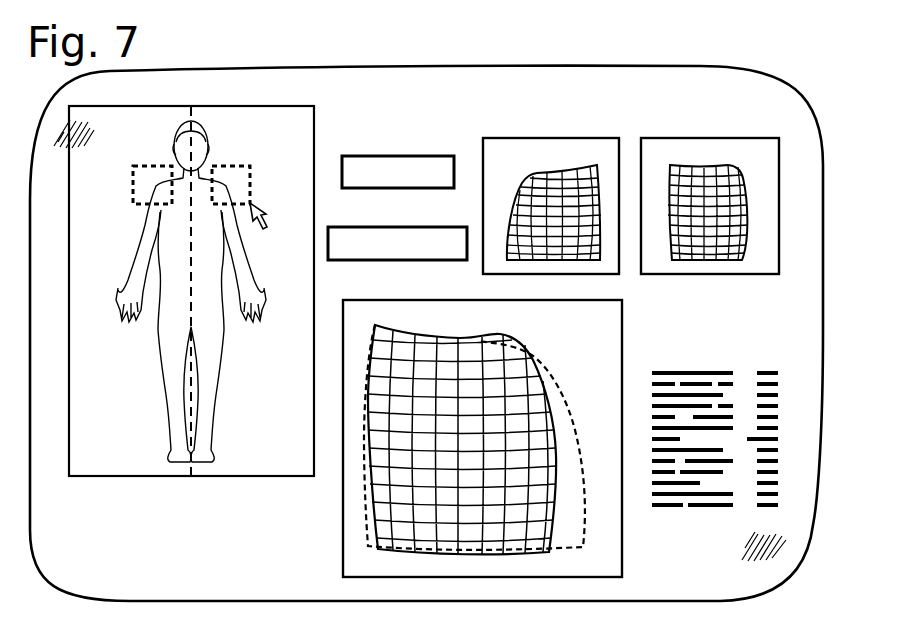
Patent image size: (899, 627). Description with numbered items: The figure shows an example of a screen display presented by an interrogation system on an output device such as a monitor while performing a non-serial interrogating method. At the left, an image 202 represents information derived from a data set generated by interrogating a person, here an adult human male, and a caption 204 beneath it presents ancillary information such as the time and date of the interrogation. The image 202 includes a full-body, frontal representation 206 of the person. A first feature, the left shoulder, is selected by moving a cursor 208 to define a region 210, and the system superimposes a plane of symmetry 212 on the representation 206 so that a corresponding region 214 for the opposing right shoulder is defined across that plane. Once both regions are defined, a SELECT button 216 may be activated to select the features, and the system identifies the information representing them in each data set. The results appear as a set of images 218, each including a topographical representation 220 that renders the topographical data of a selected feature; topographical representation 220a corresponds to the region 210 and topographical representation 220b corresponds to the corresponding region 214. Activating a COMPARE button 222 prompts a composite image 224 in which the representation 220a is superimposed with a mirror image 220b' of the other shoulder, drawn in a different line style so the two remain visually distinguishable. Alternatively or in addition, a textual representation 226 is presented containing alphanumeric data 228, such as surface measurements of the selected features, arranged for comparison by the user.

The image 202 is at (240, 104).
The caption 204 is at (108, 508).
The full-body frontal representation 206 is at (232, 378).
The cursor 208 is at (266, 227).
The region 210 is at (251, 189).
The plane of symmetry 212 is at (185, 382).
The corresponding region 214 is at (124, 181).
The SELECT button 216 is at (398, 156).
The set of images 218 is at (707, 106).
The topographical representation 220 is at (567, 329).
The topographical representation 220a is at (720, 195).
The topographical representation 220b is at (545, 202).
The mirror image of representation 220b 220b' is at (488, 437).
The COMPARE button 222 is at (407, 227).
The composite image 224 is at (333, 543).
The textual representation 226 is at (703, 363).
The alphanumeric data 228 is at (705, 508).